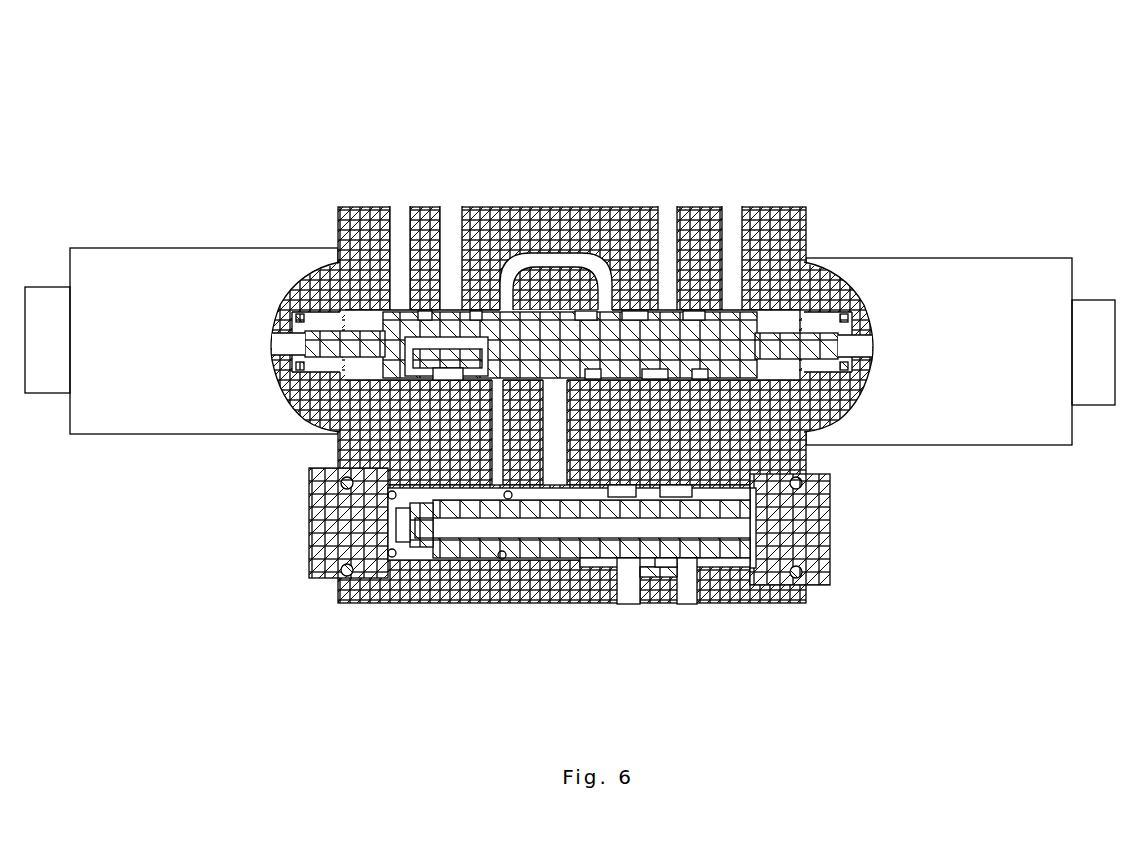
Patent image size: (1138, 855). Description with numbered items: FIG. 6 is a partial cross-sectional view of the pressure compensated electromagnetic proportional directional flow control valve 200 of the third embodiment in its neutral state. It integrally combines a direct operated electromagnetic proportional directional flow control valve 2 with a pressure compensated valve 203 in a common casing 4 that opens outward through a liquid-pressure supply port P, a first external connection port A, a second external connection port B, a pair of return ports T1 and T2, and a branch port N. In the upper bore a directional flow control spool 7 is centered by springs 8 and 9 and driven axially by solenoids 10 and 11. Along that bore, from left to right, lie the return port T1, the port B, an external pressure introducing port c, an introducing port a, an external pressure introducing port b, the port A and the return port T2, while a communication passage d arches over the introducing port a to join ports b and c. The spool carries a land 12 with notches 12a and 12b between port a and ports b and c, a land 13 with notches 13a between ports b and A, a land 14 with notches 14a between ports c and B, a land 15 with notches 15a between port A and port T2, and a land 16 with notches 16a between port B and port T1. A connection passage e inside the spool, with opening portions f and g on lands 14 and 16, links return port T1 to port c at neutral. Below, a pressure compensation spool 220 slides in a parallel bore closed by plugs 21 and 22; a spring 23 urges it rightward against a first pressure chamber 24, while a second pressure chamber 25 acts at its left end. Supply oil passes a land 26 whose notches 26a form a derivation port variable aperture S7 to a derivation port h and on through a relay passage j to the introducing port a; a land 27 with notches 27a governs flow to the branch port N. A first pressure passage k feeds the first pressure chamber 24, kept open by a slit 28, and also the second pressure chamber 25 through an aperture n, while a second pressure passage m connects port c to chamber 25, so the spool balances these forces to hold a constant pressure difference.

The pressure compensated electromagnetic proportional directional flow control valve 200 is at (210, 128).
The electromagnetic proportional directional flow control valve 2 is at (335, 226).
The casing 4 is at (808, 212).
The directional flow control spool 7 is at (752, 312).
The spring 8 is at (822, 292).
The spring 9 is at (315, 302).
The solenoid 10 is at (1020, 258).
The solenoid 11 is at (110, 255).
The land 12 is at (585, 312).
The notches 12a is at (600, 312).
The notches 12b is at (520, 300).
The land 13 is at (645, 312).
The notches 13a is at (672, 312).
The land 14 is at (470, 330).
The notches 14a is at (448, 338).
The land 15 is at (720, 312).
The notches 15a is at (700, 312).
The land 16 is at (395, 312).
The notches 16a is at (430, 312).
The plug 21 is at (815, 572).
The plug 22 is at (320, 570).
The spring 23 is at (427, 557).
The first pressure chamber 24 is at (742, 560).
The second pressure chamber 25 is at (398, 512).
The land 26 is at (615, 498).
The notches 26a is at (602, 500).
The land 27 is at (660, 567).
The notches 27a is at (672, 567).
The slit 28 is at (750, 510).
The lower valve housing 203 is at (341, 610).
The pressure compensation spool 220 is at (500, 548).
The introducing port a is at (572, 312).
The external pressure introducing port b is at (628, 312).
The external pressure introducing port c is at (497, 312).
The communication passage d is at (540, 268).
The connection passage e is at (440, 312).
The opening portion f is at (492, 440).
The opening portion g is at (365, 395).
The derivation port h is at (582, 552).
The relay passage j is at (553, 462).
The first pressure passage k is at (725, 532).
The second pressure passage m is at (485, 542).
The aperture n is at (396, 535).
The derivation port variable aperture S7 is at (625, 560).
The return port T1 is at (396, 200).
The return port T2 is at (730, 202).
The first external connection port A is at (667, 202).
The second external connection port B is at (451, 200).
The liquid-pressure supply port P is at (628, 593).
The branch port N is at (687, 593).